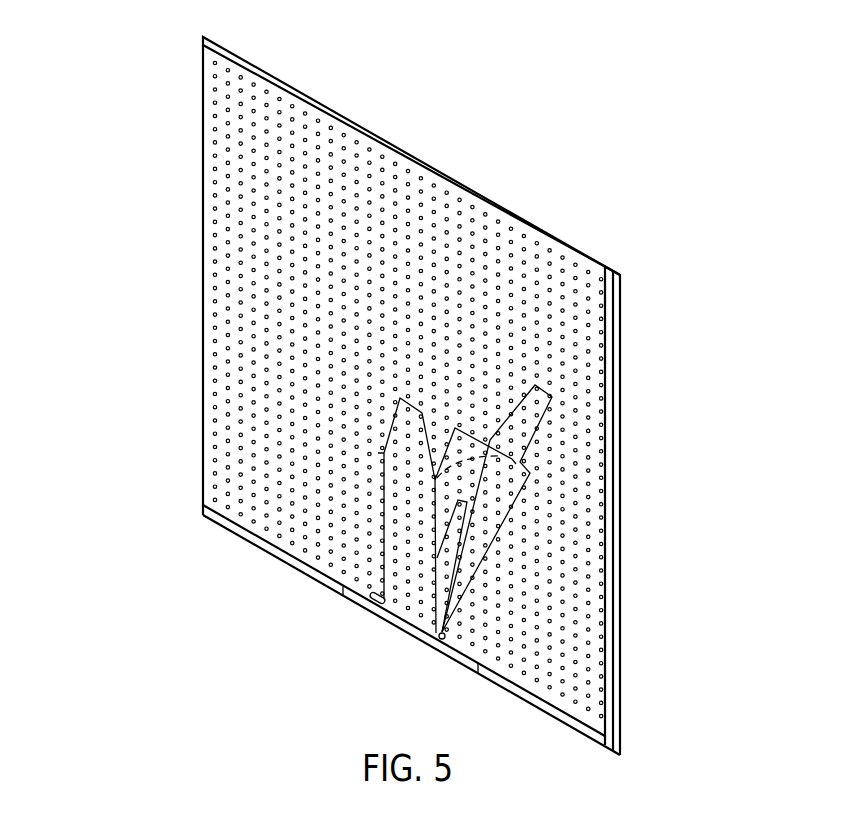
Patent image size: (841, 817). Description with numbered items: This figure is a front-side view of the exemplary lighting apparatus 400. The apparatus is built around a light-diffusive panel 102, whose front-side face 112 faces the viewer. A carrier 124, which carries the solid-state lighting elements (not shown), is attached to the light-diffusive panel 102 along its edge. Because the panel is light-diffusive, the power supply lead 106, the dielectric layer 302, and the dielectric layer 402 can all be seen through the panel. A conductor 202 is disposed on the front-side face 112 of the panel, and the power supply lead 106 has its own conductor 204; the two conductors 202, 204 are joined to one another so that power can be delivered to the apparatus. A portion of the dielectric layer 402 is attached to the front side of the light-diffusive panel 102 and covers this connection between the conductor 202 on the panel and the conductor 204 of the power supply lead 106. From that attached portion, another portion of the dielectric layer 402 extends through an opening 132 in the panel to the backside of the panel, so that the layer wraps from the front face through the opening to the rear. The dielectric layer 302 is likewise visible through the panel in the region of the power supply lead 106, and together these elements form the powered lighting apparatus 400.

The lighting apparatus 400 is at (104, 100).
The light-diffusive panel 102 is at (203, 335).
The front-side face 112 is at (345, 142).
The power supply lead 106 is at (468, 442).
The carrier 124 is at (610, 308).
The dielectric layer 302 is at (545, 408).
The conductor 204 is at (460, 532).
The conductor 202 is at (262, 548).
The dielectric layer 402 is at (390, 518).
The opening 132 is at (375, 604).